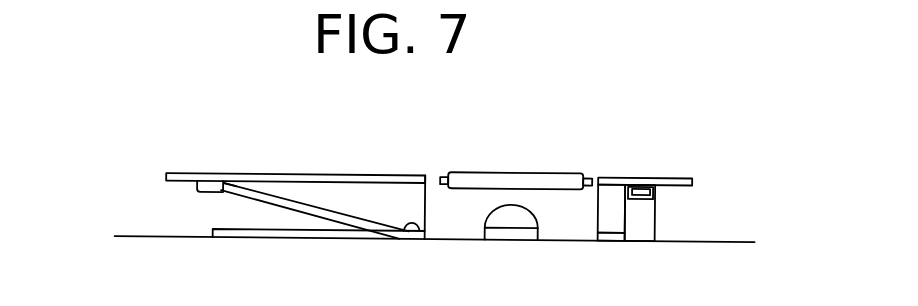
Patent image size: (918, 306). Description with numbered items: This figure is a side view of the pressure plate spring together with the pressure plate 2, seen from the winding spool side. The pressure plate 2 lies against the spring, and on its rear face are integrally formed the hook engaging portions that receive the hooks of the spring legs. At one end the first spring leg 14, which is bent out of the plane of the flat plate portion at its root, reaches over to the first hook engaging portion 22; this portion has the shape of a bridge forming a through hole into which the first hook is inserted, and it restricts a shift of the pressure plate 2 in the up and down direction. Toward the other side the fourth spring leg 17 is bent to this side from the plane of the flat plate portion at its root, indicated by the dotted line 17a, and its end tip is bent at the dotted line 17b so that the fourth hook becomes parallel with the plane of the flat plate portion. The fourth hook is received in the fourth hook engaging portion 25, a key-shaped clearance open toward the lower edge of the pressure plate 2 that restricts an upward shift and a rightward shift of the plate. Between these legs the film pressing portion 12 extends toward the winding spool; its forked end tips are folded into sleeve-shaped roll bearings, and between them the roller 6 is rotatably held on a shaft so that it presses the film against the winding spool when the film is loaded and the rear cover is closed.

The pressure plate 2 is at (315, 176).
The roller 6 is at (497, 181).
The film pressing portion 12 is at (435, 208).
The first spring leg 14 is at (694, 195).
The fourth spring leg 17 is at (327, 208).
The root of the fourth spring leg 17a is at (410, 240).
The bend line of the fourth spring leg end tip 17b is at (227, 191).
The first hook engaging portion 22 is at (655, 191).
The fourth hook engaging portion 25 is at (197, 195).